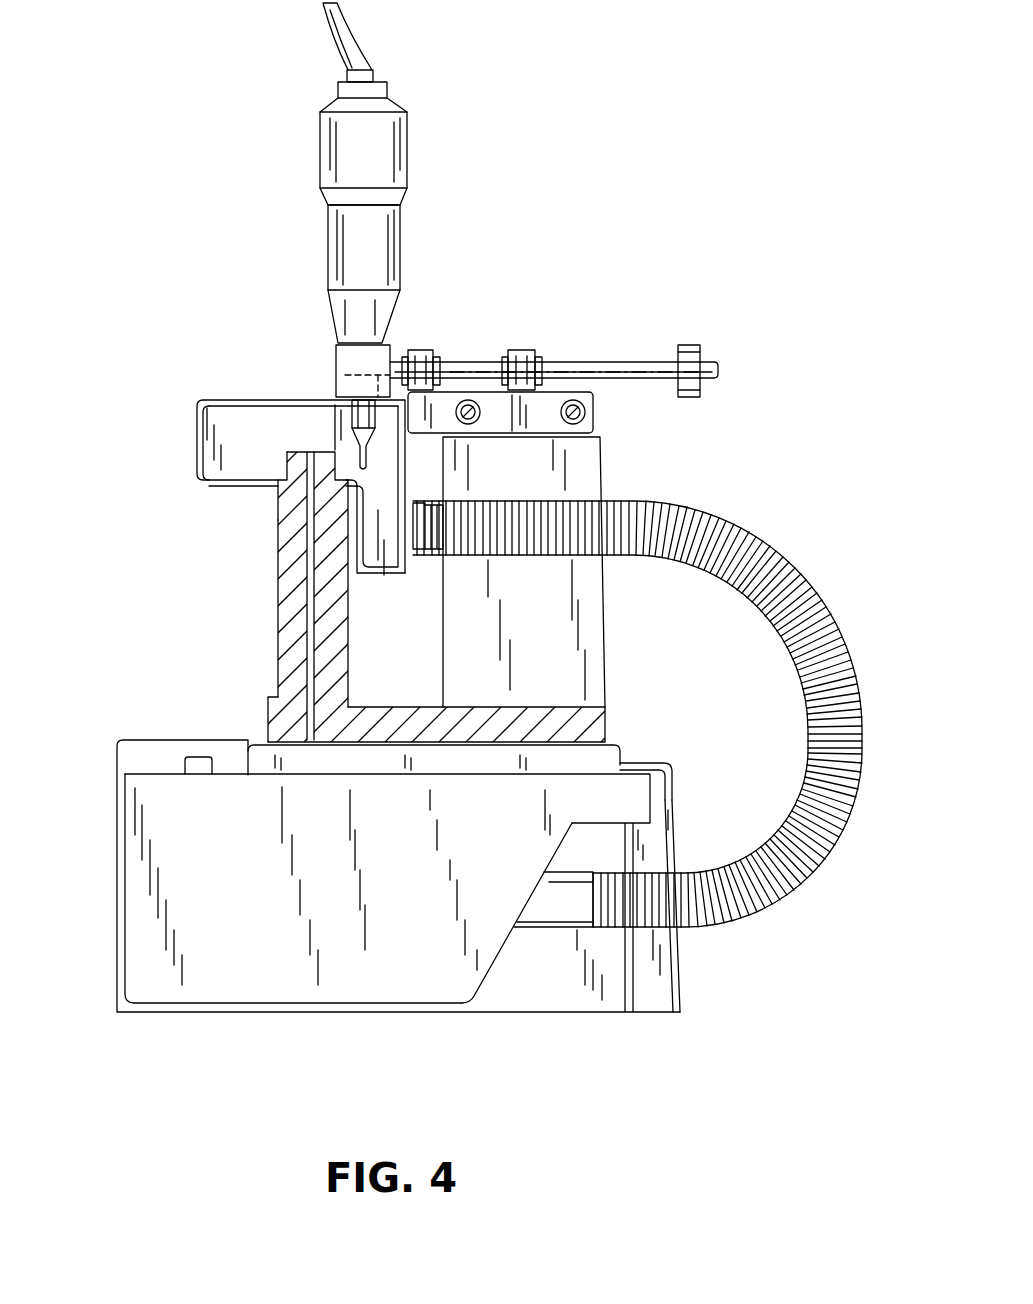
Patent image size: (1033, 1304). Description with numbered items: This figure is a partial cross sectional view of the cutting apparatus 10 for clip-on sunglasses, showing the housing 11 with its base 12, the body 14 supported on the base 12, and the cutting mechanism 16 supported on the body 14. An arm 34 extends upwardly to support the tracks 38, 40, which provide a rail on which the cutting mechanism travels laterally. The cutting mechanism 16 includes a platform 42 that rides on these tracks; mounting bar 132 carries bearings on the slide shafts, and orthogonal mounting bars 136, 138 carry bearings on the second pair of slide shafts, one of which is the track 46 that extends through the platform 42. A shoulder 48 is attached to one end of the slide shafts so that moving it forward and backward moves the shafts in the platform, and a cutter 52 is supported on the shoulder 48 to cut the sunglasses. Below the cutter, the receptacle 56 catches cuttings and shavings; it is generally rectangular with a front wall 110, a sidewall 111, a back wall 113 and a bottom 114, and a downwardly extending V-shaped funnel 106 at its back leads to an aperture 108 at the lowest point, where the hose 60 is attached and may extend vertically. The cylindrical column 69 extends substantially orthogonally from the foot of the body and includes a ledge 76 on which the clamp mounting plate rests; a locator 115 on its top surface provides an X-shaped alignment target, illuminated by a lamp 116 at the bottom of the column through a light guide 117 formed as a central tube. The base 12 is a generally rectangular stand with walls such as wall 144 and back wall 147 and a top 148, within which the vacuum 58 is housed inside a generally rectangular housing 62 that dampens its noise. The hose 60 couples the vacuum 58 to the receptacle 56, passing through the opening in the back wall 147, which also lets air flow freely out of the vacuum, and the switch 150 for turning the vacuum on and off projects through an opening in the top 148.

The cutting apparatus 10 is at (613, 283).
The housing 11 is at (613, 733).
The base 12 is at (102, 912).
The body 14 is at (264, 652).
The cutting mechanism 16 is at (616, 344).
The arm 34 is at (591, 475).
The track 38 is at (591, 418).
The track 40 is at (472, 425).
The platform 42 is at (537, 348).
The track 46 is at (720, 374).
The shoulder 48 is at (337, 368).
The cutter 52 is at (393, 183).
The receptacle 56 is at (191, 453).
The vacuum 58 is at (512, 941).
The hose 60 is at (737, 921).
The housing 62 is at (673, 771).
The column 69 is at (338, 668).
The ledge 76 is at (281, 496).
The funnel 106 is at (358, 575).
The aperture 108 is at (390, 571).
The front wall 110 is at (198, 421).
The sidewall 111 is at (243, 407).
The back wall 113 is at (404, 479).
The bottom 114 is at (206, 488).
The locator 115 is at (308, 455).
The lamp 116 is at (312, 738).
The light guide 117 is at (306, 588).
The mounting bar 132 is at (512, 434).
The mounting bar 136 is at (518, 350).
The mounting bar 138 is at (426, 350).
The wall 144 is at (118, 976).
The back wall 147 is at (683, 983).
The top 148 is at (448, 746).
The switch 150 is at (185, 758).